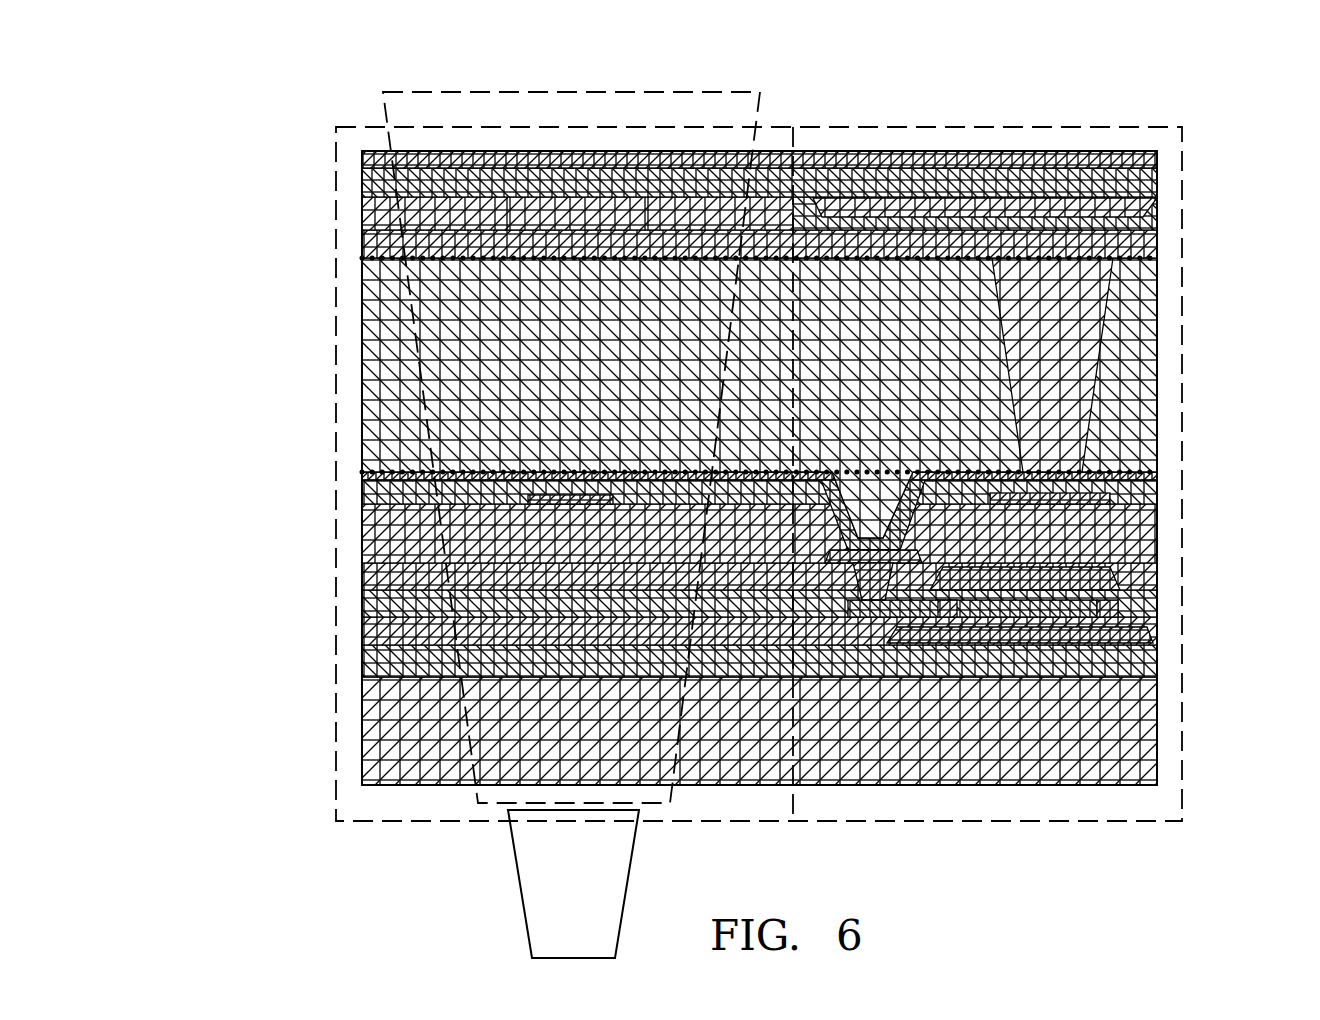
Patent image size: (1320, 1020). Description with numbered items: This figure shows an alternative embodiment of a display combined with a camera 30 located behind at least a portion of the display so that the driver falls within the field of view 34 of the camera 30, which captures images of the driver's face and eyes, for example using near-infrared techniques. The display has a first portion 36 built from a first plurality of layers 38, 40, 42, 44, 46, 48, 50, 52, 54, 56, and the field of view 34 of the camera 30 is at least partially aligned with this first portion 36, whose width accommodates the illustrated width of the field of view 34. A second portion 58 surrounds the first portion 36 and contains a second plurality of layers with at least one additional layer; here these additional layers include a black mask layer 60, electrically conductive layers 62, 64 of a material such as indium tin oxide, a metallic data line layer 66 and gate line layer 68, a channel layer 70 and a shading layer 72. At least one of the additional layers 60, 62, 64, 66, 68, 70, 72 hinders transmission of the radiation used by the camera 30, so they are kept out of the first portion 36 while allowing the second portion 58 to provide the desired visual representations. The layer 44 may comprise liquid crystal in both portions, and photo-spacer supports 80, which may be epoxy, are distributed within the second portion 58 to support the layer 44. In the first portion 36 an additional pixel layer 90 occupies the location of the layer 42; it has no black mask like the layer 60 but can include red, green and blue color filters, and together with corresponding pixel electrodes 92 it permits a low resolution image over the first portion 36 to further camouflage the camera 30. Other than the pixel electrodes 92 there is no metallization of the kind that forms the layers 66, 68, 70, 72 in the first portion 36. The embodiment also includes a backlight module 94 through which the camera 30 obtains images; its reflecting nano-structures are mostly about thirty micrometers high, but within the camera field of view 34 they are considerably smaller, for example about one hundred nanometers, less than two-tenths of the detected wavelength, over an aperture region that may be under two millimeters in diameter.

The camera 30 is at (615, 890).
The field of view 34 is at (420, 91).
The first portion 36 is at (795, 127).
The layer 38 is at (363, 155).
The layer 40 is at (365, 188).
The layer 42 is at (365, 246).
The layer 44 is at (365, 315).
The layer 46 is at (365, 493).
The layer 48 is at (365, 540).
The layer 50 is at (365, 578).
The layer 52 is at (365, 600).
The layer 54 is at (365, 626).
The layer 56 is at (365, 660).
The second portion 58 is at (1123, 127).
The black mask layer 60 is at (1103, 200).
The electrically conductive layer 62 is at (365, 472).
The electrically conductive layer 64 is at (1097, 500).
The data line layer 66 is at (890, 555).
The gate line layer 68 is at (1067, 566).
The channel layer 70 is at (1063, 607).
The shading layer 72 is at (1067, 643).
The photo-spacer supports 80 is at (1090, 333).
The pixel layer 90 is at (365, 215).
The pixel electrodes 92 is at (545, 492).
The backlight module 94 is at (365, 758).